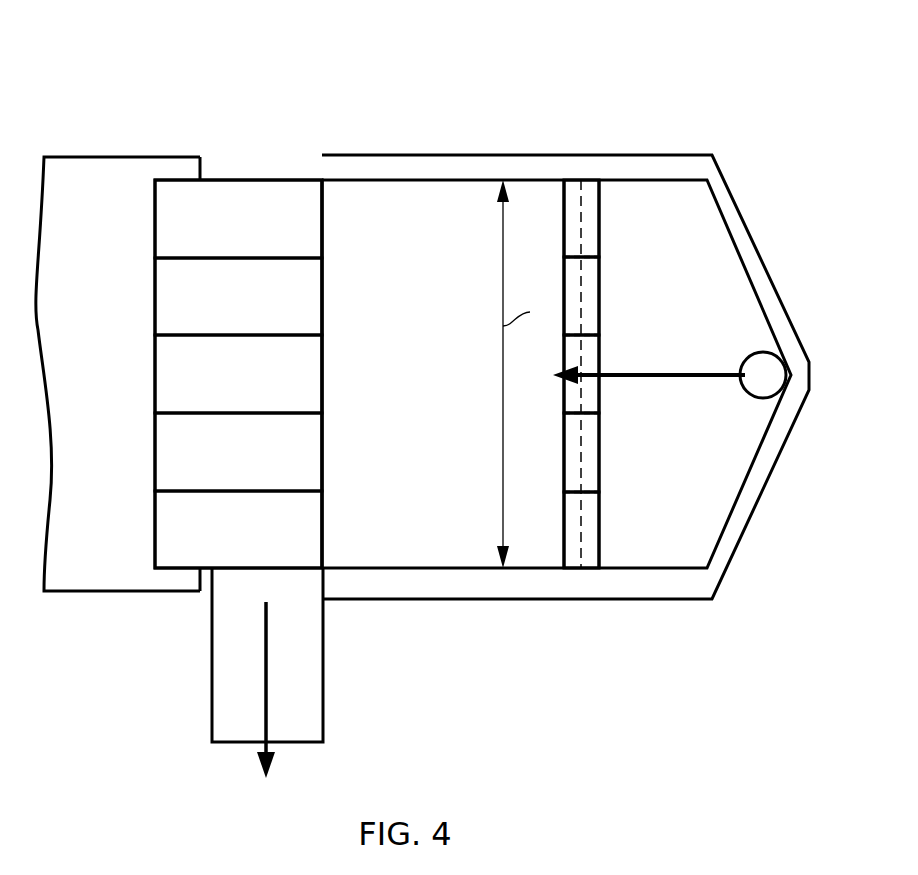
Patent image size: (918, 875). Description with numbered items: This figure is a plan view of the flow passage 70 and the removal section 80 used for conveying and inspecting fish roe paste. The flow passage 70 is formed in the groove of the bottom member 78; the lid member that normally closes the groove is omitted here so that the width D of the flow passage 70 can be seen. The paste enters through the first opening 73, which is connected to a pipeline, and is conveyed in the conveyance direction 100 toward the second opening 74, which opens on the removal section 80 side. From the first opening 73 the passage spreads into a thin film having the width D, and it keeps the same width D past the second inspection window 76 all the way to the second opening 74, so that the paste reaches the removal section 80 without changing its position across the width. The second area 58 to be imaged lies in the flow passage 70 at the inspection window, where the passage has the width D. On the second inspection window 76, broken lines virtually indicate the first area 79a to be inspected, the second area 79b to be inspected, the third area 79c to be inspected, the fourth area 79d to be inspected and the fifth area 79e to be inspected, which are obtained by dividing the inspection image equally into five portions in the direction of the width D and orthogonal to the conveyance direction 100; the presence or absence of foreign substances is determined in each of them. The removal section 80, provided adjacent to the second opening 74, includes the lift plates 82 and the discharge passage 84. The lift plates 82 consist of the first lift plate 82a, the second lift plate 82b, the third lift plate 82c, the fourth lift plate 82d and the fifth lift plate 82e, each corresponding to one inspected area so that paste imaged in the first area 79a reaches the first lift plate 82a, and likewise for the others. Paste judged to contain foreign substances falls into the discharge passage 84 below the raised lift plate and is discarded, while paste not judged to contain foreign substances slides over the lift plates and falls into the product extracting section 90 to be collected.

The product extracting section 90 is at (108, 157).
The removal section 80 is at (218, 165).
The lift plates 82 is at (250, 180).
The first lift plate 82a is at (318, 235).
The second lift plate 82b is at (318, 311).
The third lift plate 82c is at (318, 377).
The fourth lift plate 82d is at (318, 474).
The fifth lift plate 82e is at (318, 544).
The discharge passage 84 is at (212, 665).
The second opening 74 is at (322, 213).
The bottom member 78 is at (462, 588).
The flow passage 70 is at (500, 374).
The second inspection window 76 is at (563, 218).
The second area to be imaged 58 is at (581, 185).
The first area to be inspected 79a is at (599, 222).
The second area to be inspected 79b is at (596, 300).
The third area to be inspected 79c is at (599, 393).
The fourth area to be inspected 79d is at (596, 464).
The fifth area to be inspected 79e is at (596, 535).
The conveyance direction 100 is at (642, 372).
The first opening 73 is at (743, 395).